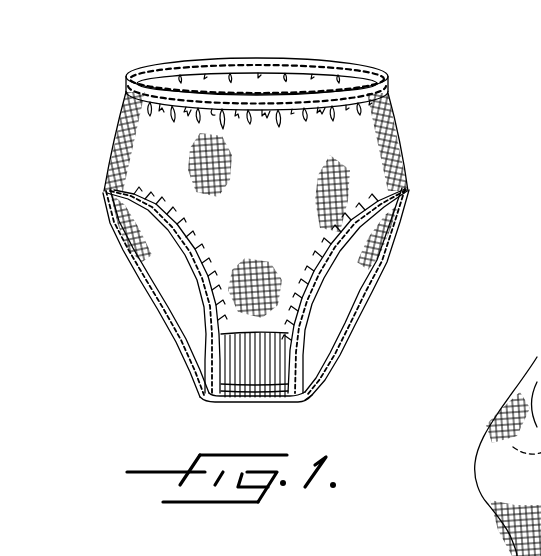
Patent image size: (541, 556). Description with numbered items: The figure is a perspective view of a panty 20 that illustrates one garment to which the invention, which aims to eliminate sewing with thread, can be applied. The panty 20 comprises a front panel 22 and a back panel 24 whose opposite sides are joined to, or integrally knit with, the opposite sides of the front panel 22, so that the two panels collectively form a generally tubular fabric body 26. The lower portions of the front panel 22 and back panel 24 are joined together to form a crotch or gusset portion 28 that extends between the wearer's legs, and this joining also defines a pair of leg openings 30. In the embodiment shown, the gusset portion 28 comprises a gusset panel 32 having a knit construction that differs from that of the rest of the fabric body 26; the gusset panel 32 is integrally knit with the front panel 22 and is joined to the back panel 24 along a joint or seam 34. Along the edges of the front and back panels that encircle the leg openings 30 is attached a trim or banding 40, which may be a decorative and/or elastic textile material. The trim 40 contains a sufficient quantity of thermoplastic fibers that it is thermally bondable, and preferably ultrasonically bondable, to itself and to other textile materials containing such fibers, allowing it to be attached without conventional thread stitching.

The panty 20 is at (116, 82).
The front panel 22 is at (284, 214).
The back panel 24 is at (143, 242).
The fabric body 26 is at (414, 145).
The gusset portion 28 is at (287, 404).
The leg openings 30 is at (178, 292).
The gusset panel 32 is at (247, 360).
The seam 34 is at (302, 348).
The trim 40 is at (281, 59).